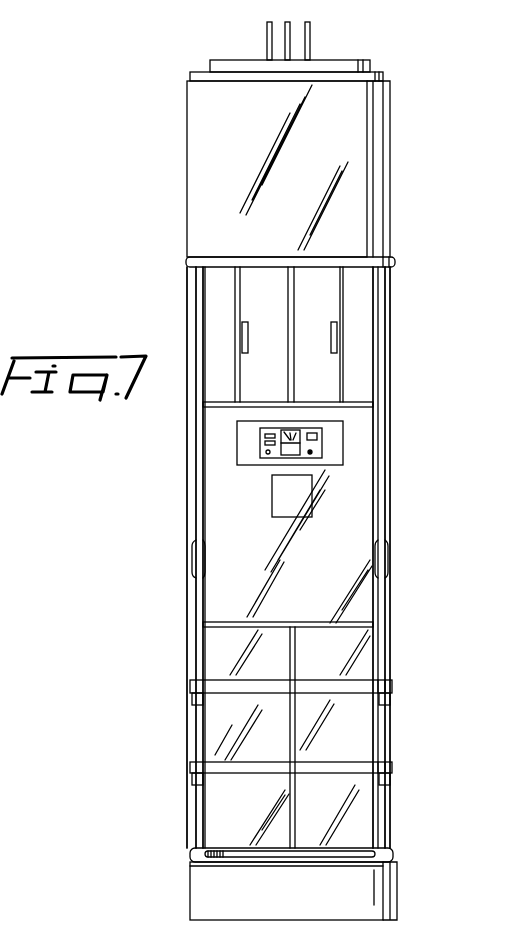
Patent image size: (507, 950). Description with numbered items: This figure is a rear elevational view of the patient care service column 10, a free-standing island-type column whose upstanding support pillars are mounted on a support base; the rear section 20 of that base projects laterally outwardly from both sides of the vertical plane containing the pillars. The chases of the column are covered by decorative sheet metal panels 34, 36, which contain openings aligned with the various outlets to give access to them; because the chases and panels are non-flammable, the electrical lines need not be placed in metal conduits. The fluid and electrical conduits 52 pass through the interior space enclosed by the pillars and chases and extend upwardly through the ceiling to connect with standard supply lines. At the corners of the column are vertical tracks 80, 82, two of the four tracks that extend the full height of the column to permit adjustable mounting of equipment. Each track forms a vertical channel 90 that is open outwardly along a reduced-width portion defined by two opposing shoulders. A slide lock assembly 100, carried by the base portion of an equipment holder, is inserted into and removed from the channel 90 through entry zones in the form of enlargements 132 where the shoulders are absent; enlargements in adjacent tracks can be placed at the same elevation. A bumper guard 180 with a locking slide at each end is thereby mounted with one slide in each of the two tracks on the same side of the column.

The patient care service column 10 is at (430, 150).
The rear section of base 20 is at (190, 890).
The sheet metal panel 34 is at (506, 572).
The sheet metal panel 36 is at (357, 440).
The fluid and electrical conduits 52 is at (308, 46).
The vertical track 80 is at (190, 513).
The vertical track 82 is at (393, 530).
The vertical channel 90 is at (383, 353).
The slide lock assembly 100 is at (192, 700).
The enlargement 132 is at (195, 563).
The bumper guard 180 is at (355, 683).